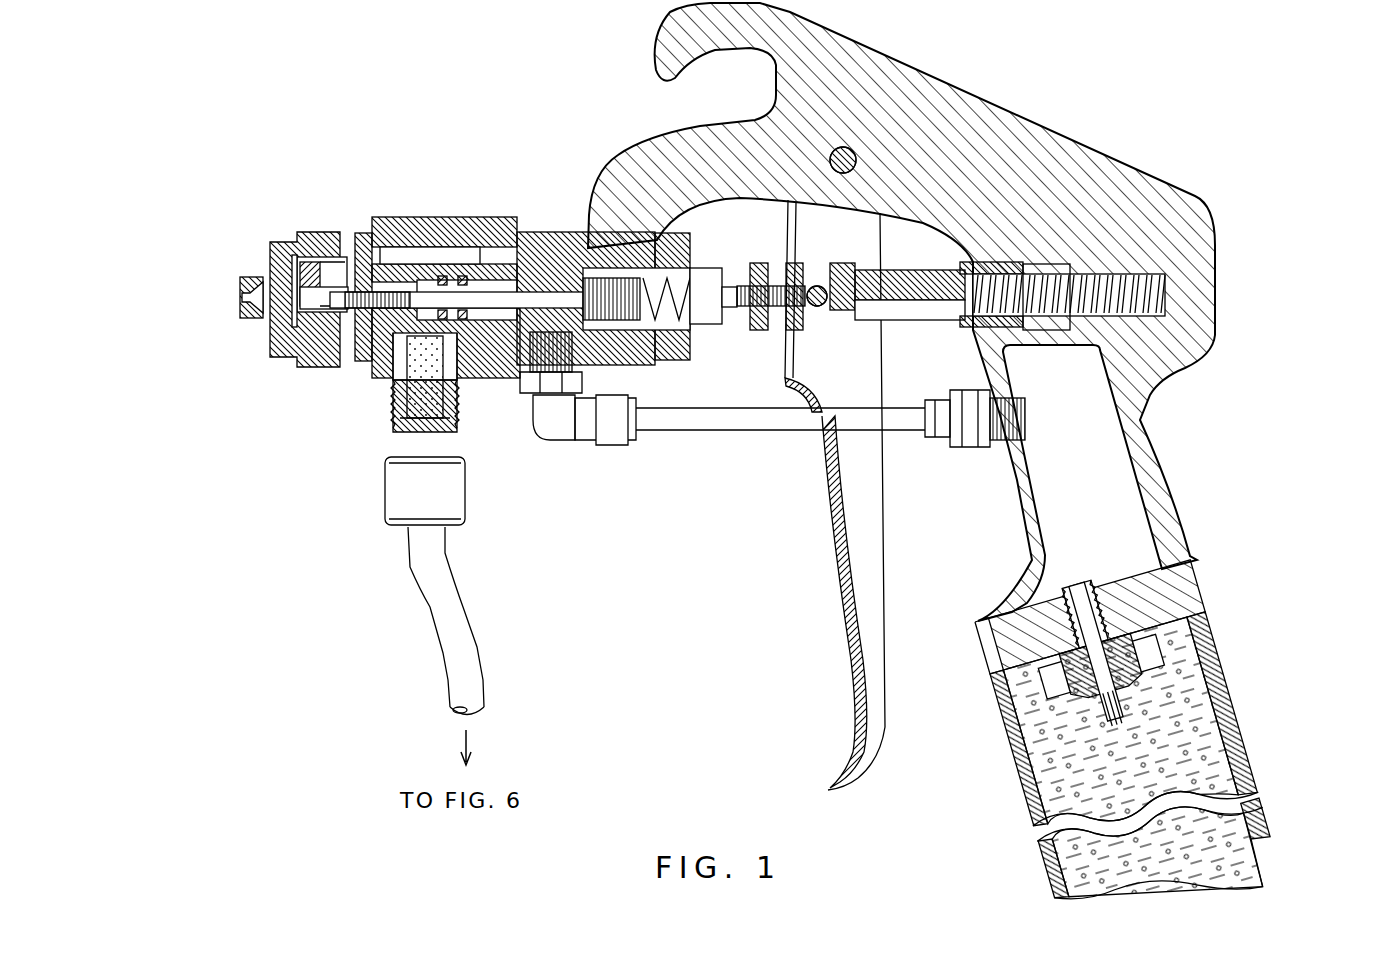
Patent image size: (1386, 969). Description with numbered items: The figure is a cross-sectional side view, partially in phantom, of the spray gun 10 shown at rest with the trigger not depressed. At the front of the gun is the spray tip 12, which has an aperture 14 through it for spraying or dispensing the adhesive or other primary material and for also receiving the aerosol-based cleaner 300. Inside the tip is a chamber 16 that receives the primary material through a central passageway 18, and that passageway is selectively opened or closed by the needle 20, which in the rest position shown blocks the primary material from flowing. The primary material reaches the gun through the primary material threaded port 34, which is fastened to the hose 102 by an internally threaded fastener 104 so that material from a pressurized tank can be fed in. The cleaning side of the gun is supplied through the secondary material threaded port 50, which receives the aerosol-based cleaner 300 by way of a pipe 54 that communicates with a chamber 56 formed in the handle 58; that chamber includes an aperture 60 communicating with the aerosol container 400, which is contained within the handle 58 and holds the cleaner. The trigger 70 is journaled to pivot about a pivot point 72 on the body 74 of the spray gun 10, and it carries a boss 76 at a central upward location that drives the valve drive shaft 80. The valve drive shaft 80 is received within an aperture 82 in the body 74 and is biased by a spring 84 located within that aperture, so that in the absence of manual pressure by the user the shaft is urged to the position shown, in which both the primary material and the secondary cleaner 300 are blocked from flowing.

The spray gun 10 is at (208, 112).
The spray tip 12 is at (240, 284).
The aperture 14 is at (240, 300).
The chamber 16 is at (273, 287).
The central passageway 18 is at (296, 292).
The needle 20 is at (300, 240).
The primary material threaded port 34 is at (393, 415).
The secondary material threaded port 50 is at (528, 385).
The pipe 54 is at (680, 428).
The chamber 56 is at (1106, 503).
The handle 58 is at (1146, 700).
The aperture 60 is at (1078, 593).
The trigger 70 is at (840, 583).
The pivot point 72 is at (845, 147).
The body 74 is at (983, 125).
The boss 76 is at (812, 320).
The valve drive shaft 80 is at (895, 302).
The aperture 82 is at (1055, 262).
The spring 84 is at (1135, 295).
The hose 102 is at (432, 600).
The internally threaded fastener 104 is at (462, 492).
The aerosol-based cleaner 300 is at (1210, 752).
The aerosol container 400 is at (1268, 874).